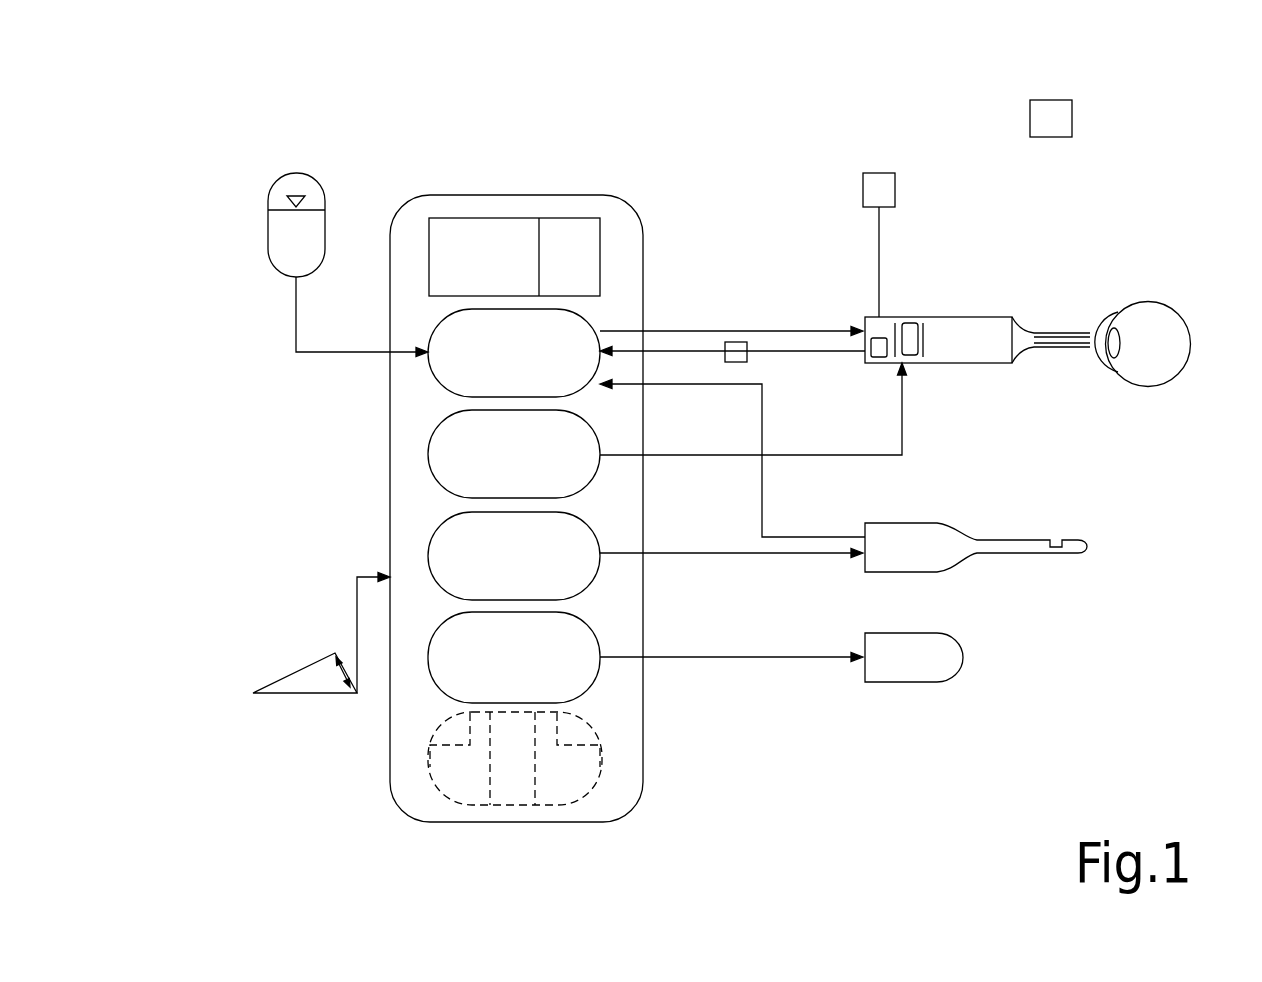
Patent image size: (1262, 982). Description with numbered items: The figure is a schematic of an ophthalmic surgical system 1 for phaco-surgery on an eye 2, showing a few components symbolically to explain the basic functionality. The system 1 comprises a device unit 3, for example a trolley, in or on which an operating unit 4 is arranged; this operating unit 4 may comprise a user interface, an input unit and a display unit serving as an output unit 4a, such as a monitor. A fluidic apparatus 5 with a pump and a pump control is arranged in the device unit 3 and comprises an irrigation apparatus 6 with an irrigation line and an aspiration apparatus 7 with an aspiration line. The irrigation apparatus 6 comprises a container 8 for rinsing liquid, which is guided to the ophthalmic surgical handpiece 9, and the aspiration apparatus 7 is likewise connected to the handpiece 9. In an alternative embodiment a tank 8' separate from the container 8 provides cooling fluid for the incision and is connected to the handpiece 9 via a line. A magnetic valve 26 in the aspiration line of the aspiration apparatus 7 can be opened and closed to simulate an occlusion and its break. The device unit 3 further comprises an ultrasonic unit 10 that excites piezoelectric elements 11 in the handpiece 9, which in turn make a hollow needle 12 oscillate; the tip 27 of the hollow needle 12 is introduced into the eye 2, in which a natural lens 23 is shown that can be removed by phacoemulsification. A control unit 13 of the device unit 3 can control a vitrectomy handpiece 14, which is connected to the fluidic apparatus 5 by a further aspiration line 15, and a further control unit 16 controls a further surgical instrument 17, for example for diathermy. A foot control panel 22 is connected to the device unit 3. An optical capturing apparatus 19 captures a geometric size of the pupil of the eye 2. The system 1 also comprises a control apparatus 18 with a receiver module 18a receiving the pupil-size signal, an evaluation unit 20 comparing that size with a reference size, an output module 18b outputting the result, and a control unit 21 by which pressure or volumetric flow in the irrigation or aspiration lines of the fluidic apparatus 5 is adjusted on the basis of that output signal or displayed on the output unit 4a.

The ophthalmic surgical system 1 is at (689, 296).
The eye 2 is at (1160, 285).
The device unit 3 is at (598, 195).
The operating unit 4 is at (467, 218).
The output unit 4a is at (573, 235).
The fluidic apparatus 5 is at (417, 371).
The irrigation apparatus 6 is at (296, 325).
The aspiration apparatus 7 is at (818, 355).
The container 8 is at (242, 225).
The tank 8' is at (881, 270).
The ophthalmic surgical handpiece 9 is at (988, 317).
The ultrasonic unit 10 is at (428, 460).
The piezoelectric elements 11 is at (910, 330).
The hollow needle 12 is at (1086, 350).
The control unit 13 is at (428, 553).
The vitrectomy handpiece 14 is at (1085, 547).
The further aspiration line 15 is at (763, 513).
The further control unit 16 is at (432, 675).
The further surgical instrument 17 is at (965, 657).
The control apparatus 18 is at (428, 760).
The receiver module 18a is at (453, 727).
The output module 18b is at (582, 728).
The optical capturing apparatus 19 is at (1050, 100).
The evaluation unit 20 is at (573, 770).
The control unit 21 is at (513, 788).
The foot control panel 22 is at (276, 663).
The natural lens 23 is at (1120, 343).
The magnetic valve 26 is at (735, 342).
The tip 27 is at (1096, 330).